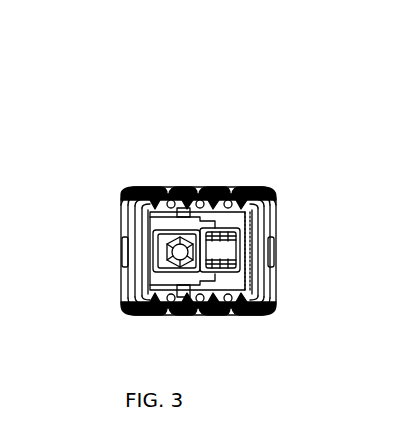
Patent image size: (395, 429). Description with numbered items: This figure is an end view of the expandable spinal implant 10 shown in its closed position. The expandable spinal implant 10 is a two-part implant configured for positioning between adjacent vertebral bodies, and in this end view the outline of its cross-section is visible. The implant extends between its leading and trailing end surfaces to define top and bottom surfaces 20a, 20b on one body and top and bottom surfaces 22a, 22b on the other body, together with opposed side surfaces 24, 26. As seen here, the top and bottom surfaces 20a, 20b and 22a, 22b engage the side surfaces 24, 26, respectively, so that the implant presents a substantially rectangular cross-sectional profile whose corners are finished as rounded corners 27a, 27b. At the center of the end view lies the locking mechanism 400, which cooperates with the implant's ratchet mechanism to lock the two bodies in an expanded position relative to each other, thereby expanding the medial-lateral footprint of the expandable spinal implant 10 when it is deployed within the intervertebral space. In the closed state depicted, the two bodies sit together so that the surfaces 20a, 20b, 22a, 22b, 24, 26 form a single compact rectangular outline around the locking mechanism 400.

The expandable spinal implant 10 is at (195, 205).
The top surface 20a is at (223, 323).
The bottom surface 20b is at (140, 323).
The top surface 22a is at (262, 176).
The bottom surface 22b is at (128, 180).
The side surface 24 is at (266, 229).
The side surface 26 is at (128, 223).
The rounded corner 27a is at (268, 200).
The rounded corner 27b is at (126, 203).
The locking mechanism 400 is at (172, 254).